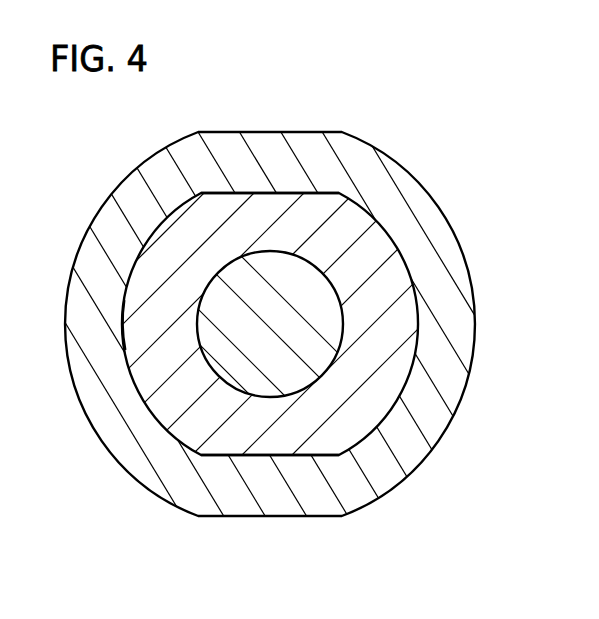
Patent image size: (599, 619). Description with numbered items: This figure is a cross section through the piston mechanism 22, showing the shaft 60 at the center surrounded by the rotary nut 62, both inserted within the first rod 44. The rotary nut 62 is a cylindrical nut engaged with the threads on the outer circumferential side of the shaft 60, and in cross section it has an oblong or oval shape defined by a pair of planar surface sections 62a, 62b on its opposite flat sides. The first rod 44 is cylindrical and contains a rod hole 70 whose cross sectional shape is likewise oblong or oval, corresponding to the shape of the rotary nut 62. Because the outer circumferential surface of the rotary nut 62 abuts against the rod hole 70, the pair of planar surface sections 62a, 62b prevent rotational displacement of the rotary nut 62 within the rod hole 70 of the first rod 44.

The piston mechanism 22 is at (359, 138).
The first rod 44 is at (395, 198).
The shaft 60 is at (240, 365).
The rotary nut 62 is at (345, 395).
The planar surface section 62a is at (245, 193).
The planar surface section 62b is at (292, 455).
The rod hole 70 is at (125, 350).